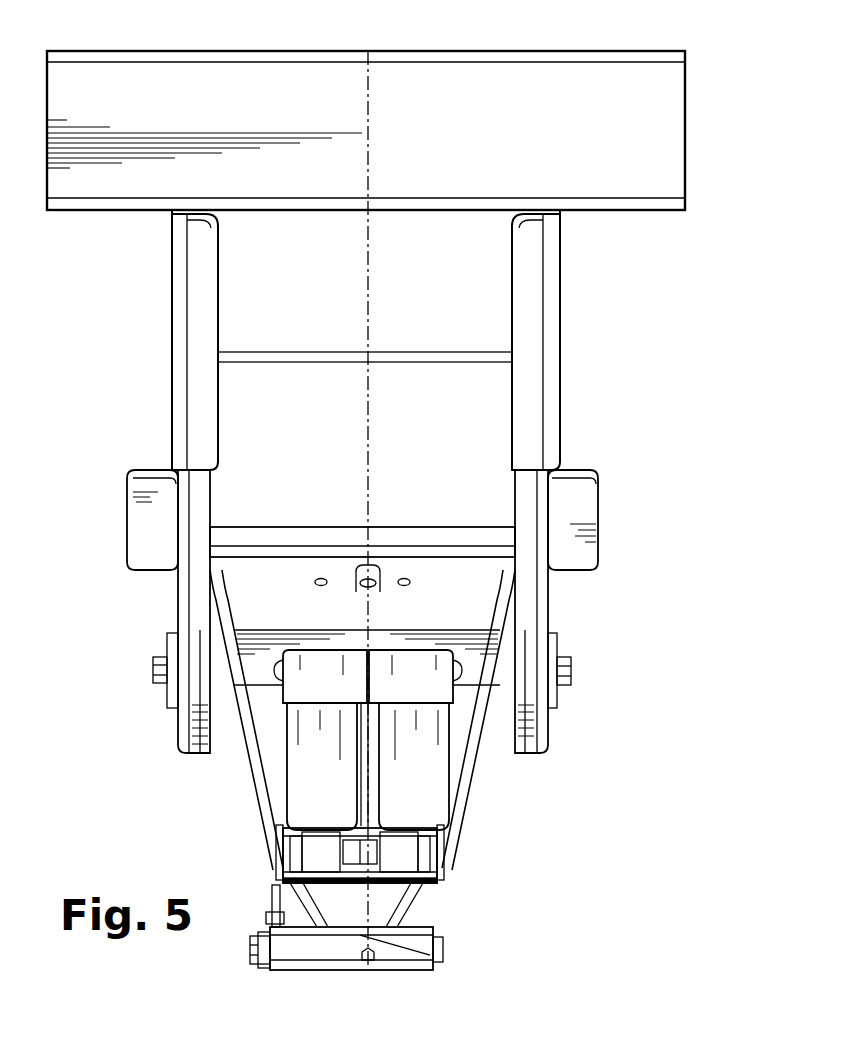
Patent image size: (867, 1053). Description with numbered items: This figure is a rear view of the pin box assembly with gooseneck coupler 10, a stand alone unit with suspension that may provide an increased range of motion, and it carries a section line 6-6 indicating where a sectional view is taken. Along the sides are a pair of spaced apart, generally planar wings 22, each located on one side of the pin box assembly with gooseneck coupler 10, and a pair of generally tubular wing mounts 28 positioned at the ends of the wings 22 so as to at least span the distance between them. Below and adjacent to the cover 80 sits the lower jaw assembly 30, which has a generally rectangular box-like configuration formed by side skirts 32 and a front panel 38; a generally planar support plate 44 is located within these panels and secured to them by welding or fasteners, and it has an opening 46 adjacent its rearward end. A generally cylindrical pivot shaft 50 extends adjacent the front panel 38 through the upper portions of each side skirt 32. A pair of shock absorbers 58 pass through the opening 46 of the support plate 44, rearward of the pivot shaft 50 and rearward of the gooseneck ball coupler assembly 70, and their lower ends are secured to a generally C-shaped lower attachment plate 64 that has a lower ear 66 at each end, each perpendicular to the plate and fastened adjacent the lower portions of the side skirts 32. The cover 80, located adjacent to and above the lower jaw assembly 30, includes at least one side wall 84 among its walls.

The section line 6- 6 is at (407, 514).
The pin box assembly with gooseneck coupler 10 is at (665, 540).
The wing 22 is at (180, 305).
The wing mount 28 is at (600, 95).
The lower jaw assembly 30 is at (660, 478).
The side skirt 32 is at (237, 765).
The front panel 38 is at (453, 714).
The support plate 44 is at (470, 652).
The opening 46 is at (485, 673).
The pivot shaft 50 is at (215, 685).
The shock absorber 58 is at (312, 786).
The lower attachment plate 64 is at (372, 872).
The lower ear 66 is at (278, 858).
The gooseneck ball coupler assembly 70 is at (458, 950).
The cover 80 is at (440, 450).
The side wall 84 is at (185, 611).